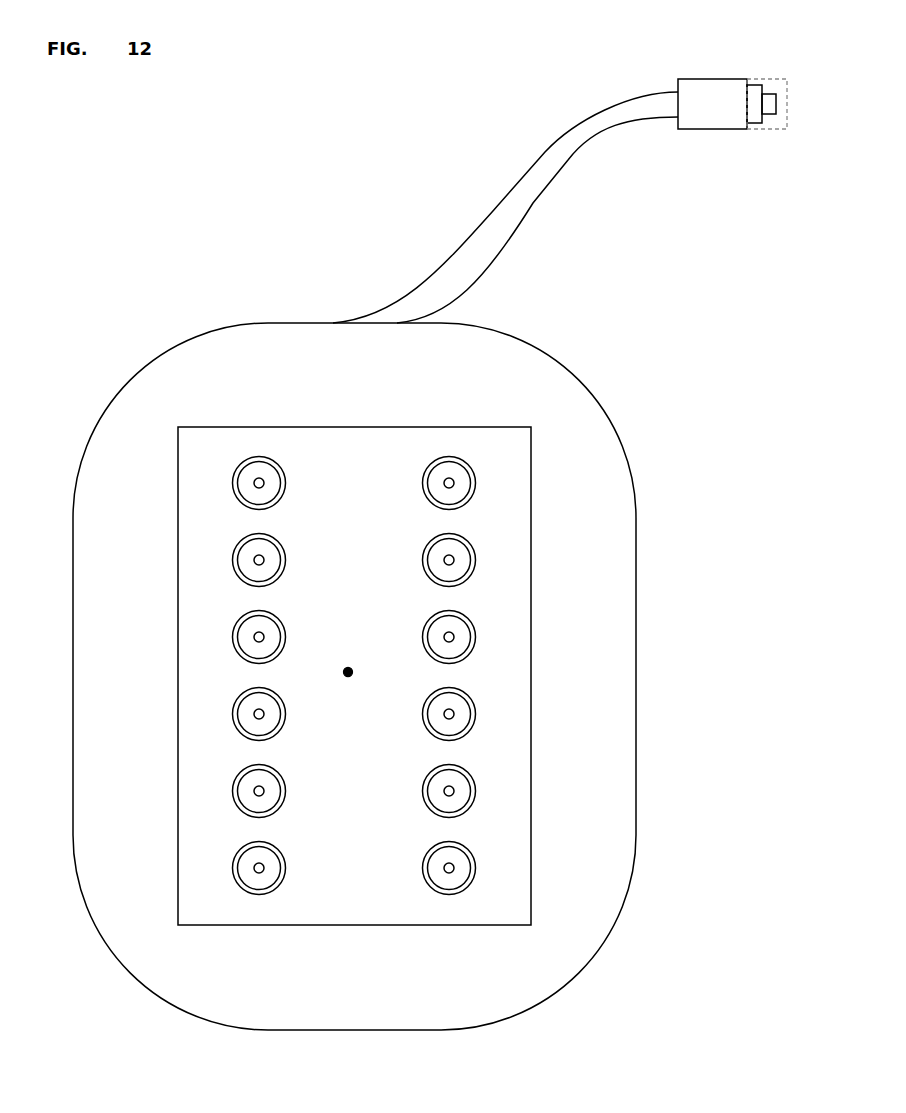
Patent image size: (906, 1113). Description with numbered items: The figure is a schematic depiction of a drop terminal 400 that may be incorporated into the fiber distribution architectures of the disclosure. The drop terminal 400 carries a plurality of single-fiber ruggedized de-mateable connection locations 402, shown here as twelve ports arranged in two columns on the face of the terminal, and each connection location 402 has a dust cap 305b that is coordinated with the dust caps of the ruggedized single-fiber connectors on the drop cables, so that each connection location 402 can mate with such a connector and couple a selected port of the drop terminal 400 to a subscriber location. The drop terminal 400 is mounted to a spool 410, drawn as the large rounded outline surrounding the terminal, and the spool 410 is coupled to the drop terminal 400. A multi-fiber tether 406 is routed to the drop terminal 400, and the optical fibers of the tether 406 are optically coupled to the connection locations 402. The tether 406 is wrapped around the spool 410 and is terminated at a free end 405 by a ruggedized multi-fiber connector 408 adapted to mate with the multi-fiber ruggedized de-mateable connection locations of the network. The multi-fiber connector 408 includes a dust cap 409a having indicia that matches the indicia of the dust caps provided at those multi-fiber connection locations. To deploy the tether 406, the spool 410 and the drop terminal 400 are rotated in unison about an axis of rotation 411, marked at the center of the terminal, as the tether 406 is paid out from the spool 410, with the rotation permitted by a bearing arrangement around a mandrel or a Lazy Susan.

The drop terminal 400 is at (531, 655).
The single-fiber ruggedized de-mateable connection location 402 is at (287, 477).
The dust cap 305b is at (449, 483).
The free end 405 is at (652, 153).
The multi-fiber tether 406 is at (535, 172).
The ruggedized multi-fiber connector 408 is at (705, 80).
The dust cap 409a is at (762, 128).
The spool 410 is at (492, 1018).
The axis of rotation 411 is at (350, 678).